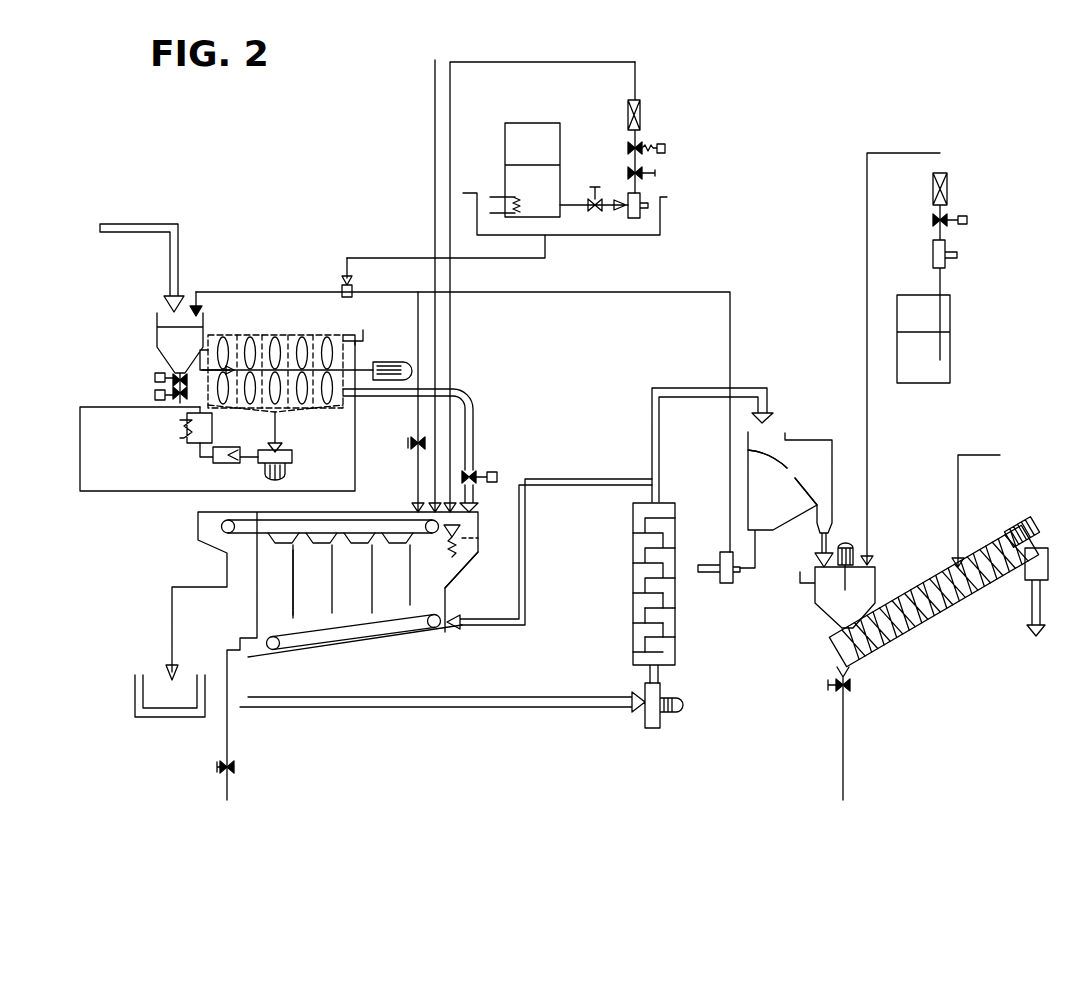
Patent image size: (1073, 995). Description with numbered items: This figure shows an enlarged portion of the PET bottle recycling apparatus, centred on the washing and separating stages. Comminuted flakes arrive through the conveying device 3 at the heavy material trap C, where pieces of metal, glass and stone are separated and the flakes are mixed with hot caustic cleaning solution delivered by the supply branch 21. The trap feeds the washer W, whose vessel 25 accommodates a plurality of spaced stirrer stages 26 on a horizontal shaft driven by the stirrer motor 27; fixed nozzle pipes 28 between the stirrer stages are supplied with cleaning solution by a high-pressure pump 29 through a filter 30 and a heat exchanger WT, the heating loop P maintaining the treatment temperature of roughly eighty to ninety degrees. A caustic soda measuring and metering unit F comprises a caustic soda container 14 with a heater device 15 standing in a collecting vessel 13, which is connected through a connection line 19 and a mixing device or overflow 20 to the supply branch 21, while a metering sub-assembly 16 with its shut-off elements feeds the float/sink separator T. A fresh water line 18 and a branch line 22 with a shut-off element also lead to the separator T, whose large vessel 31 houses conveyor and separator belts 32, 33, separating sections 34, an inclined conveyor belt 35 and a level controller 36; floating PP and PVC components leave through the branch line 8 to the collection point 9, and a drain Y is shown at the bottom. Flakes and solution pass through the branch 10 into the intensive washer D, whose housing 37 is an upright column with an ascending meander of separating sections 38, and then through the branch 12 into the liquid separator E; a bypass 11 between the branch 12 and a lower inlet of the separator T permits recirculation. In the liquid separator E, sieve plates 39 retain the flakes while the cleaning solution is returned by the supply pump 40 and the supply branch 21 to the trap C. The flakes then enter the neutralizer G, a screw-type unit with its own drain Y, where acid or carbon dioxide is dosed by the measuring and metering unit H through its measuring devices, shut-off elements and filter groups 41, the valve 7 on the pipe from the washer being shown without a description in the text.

The conveying device 3 is at (180, 250).
The valve 7 is at (478, 470).
The branch line 8 is at (172, 632).
The collection point 9 is at (145, 693).
The branch 10 is at (542, 690).
The bypass 11 is at (525, 560).
The branch 12 is at (652, 430).
The collecting vessel 13 is at (660, 235).
The caustic soda container 14 is at (560, 152).
The heater device 15 is at (494, 197).
The metering sub-assembly 16 is at (645, 193).
The fresh water line 18 is at (433, 165).
The connection line 19 is at (398, 258).
The mixing device or overflow 20 is at (343, 284).
The supply branch 21 is at (650, 292).
The branch line 22 is at (418, 410).
The vessel 25 is at (346, 333).
The stirrer stages 26 is at (222, 336).
The stirrer motor 27 is at (392, 362).
The nozzle pipes 28 is at (236, 412).
The high-pressure pump 29 is at (292, 463).
The filter 30 is at (222, 463).
The vessel 31 is at (458, 575).
The conveyor belt 32 is at (397, 512).
The separator belt 33 is at (355, 545).
The separating sections 34 is at (313, 602).
The inclined conveyor belt 35 is at (390, 617).
The level controller 36 is at (462, 530).
The housing 37 is at (633, 552).
The separating sections 38 is at (640, 612).
The sieve plates 39 is at (798, 477).
The supply pump 40 is at (723, 585).
The filter groups 41 is at (980, 210).
The heavy material trap C is at (148, 334).
The washer W is at (290, 303).
The heat exchanger WT is at (187, 430).
The pump circuit P is at (178, 449).
The float/sink separator T is at (182, 562).
The intensive washer D is at (630, 602).
The liquid separator E is at (791, 378).
The caustic soda measuring and metering unit F is at (656, 120).
The neutralizer G is at (915, 652).
The measuring and metering unit H is at (975, 318).
The outlet Y is at (228, 790).